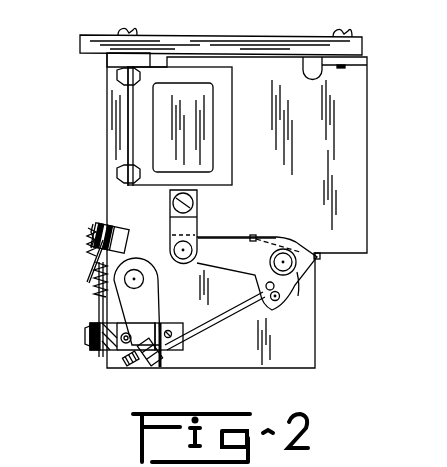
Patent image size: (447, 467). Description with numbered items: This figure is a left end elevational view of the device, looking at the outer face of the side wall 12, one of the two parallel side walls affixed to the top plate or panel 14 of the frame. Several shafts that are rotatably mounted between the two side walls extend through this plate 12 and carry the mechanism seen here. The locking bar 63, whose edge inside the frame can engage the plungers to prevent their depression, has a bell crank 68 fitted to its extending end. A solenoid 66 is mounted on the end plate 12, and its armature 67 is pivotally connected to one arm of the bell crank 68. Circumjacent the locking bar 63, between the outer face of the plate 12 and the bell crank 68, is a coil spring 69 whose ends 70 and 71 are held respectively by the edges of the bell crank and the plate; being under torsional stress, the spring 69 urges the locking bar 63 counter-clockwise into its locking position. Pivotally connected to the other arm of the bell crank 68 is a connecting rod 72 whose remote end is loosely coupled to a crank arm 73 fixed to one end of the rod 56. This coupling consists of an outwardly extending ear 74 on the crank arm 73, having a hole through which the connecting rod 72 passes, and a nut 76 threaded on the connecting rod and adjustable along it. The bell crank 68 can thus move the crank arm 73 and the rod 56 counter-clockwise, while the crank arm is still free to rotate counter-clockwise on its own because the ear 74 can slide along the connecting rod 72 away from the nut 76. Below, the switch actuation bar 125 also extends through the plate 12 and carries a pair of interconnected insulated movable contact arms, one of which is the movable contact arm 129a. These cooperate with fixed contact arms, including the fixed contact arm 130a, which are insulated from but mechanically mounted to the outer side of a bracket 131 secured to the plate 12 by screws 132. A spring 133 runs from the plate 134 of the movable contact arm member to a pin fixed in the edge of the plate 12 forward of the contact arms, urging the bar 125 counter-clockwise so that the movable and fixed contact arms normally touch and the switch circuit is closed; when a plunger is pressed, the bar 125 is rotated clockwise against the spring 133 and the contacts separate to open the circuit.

The side wall 12 is at (368, 158).
The top plate 14 is at (80, 44).
The solenoid 66 is at (233, 112).
The armature 67 is at (197, 212).
The bell crank 68 is at (230, 236).
The spring end 70 is at (256, 236).
The locking bar 63 is at (284, 258).
The spring end 71 is at (320, 259).
The coil spring 69 is at (296, 292).
The connecting rod 72 is at (218, 328).
The crank arm 73 is at (158, 303).
The rod 56 is at (136, 277).
The bracket 131 is at (180, 323).
The ear 74 is at (167, 362).
The nut 76 is at (142, 367).
The screws 132 is at (187, 324).
The switch actuation bar 125 is at (123, 226).
The plate 134 is at (93, 222).
The spring 133 is at (88, 258).
The movable contact arm 129a is at (90, 272).
The fixed contact arm 130a is at (100, 293).